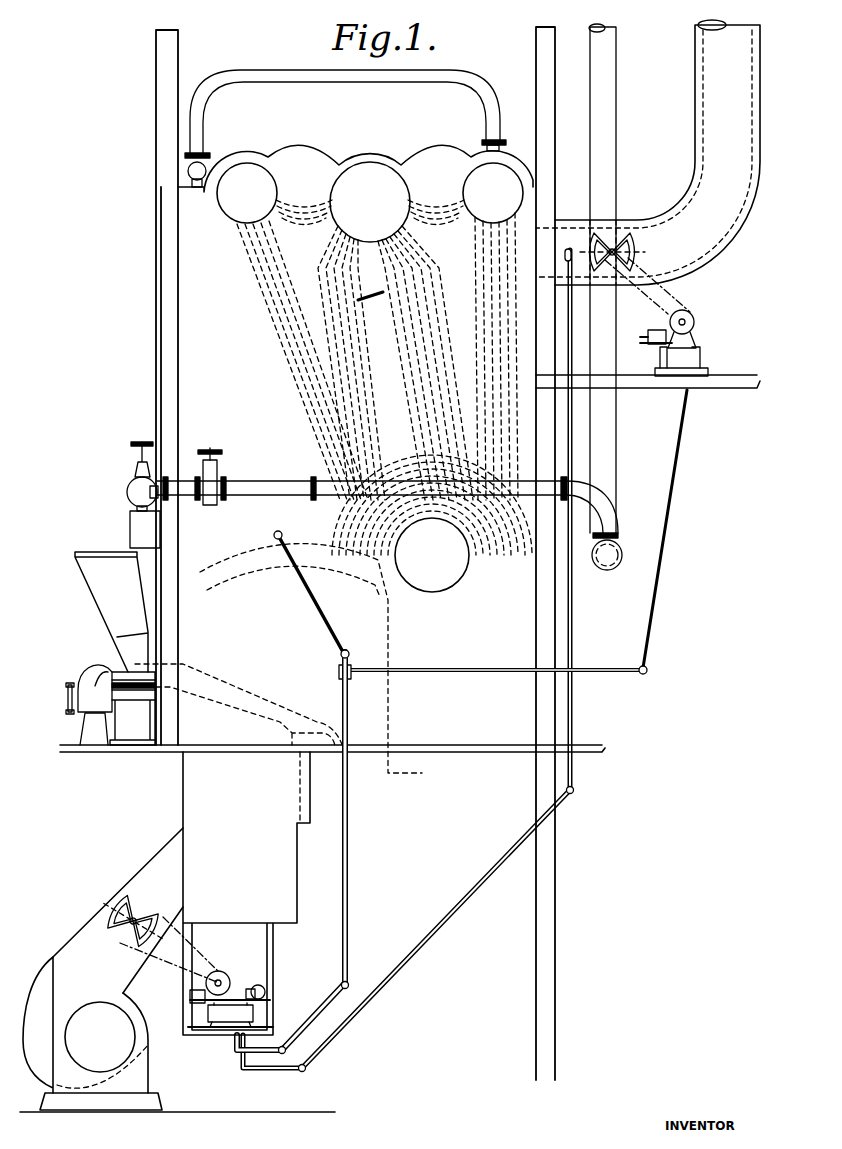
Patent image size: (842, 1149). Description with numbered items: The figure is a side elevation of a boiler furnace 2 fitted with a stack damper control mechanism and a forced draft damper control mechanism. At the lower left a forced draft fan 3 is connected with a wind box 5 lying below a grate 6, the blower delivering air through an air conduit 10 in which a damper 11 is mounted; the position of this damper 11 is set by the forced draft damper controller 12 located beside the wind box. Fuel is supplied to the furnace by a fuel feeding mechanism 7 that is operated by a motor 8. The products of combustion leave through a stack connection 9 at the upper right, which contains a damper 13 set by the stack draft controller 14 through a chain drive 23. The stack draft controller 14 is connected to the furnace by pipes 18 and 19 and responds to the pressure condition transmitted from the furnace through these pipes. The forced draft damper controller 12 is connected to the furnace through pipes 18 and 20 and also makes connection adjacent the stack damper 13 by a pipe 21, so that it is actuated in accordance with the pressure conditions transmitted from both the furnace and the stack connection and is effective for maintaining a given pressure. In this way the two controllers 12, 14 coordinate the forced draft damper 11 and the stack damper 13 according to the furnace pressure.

The boiler furnace 2 is at (390, 568).
The forced draft fan 3 is at (63, 966).
The wind box 5 is at (246, 893).
The grate 6 is at (230, 691).
The fuel feeding mechanism 7 is at (107, 588).
The motor 8 is at (88, 668).
The stack connection 9 is at (648, 152).
The air conduit 10 is at (163, 857).
The damper 11 is at (133, 882).
The forced draft damper controller 12 is at (232, 990).
The damper 13 is at (640, 253).
The stack draft controller 14 is at (700, 356).
The pipe 18 is at (326, 616).
The pipe 19 is at (473, 672).
The pipe 20 is at (351, 838).
The pipe 21 is at (456, 909).
The chain drive 23 is at (644, 306).